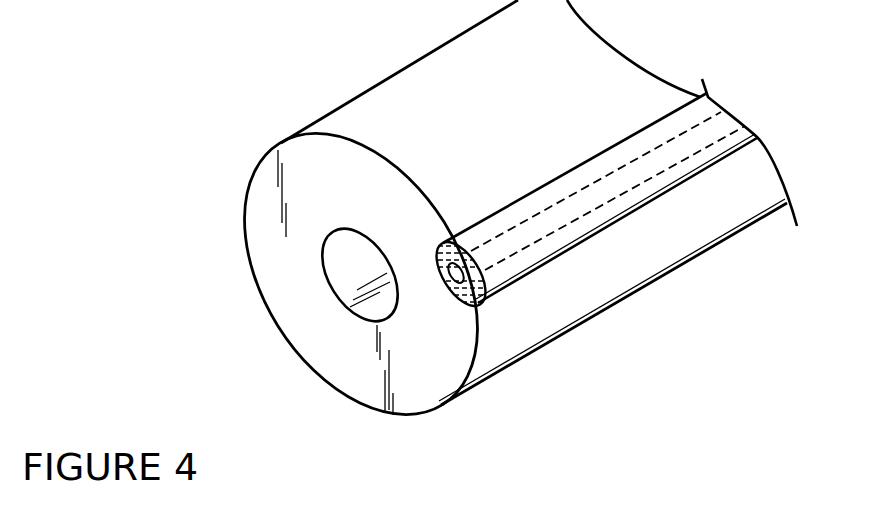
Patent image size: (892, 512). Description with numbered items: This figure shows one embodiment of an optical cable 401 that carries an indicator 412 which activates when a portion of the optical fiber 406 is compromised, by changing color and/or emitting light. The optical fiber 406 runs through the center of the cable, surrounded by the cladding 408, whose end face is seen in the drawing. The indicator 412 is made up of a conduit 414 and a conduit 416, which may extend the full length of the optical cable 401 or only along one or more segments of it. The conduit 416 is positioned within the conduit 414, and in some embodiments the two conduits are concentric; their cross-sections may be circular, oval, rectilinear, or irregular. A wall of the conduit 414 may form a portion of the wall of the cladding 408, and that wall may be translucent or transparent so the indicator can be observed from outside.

The optical cable 401 is at (330, 112).
The optical fiber 406 is at (338, 263).
The cladding 408 is at (433, 397).
The indicator 412 is at (570, 187).
The conduit 414 is at (653, 203).
The conduit 416 is at (647, 151).